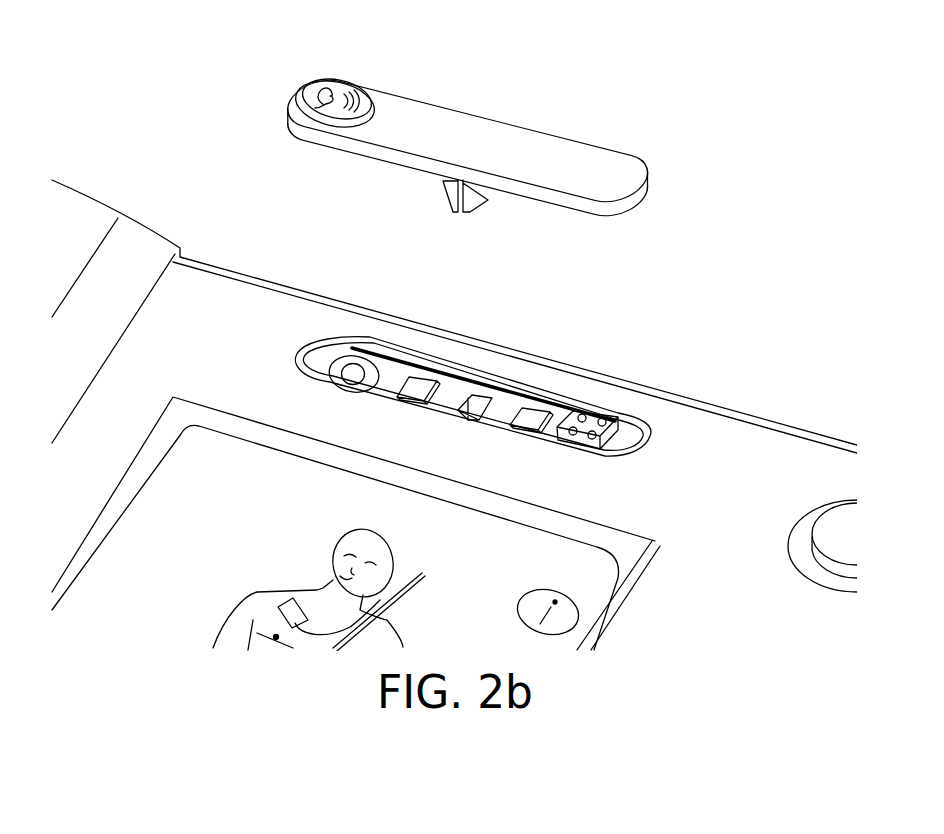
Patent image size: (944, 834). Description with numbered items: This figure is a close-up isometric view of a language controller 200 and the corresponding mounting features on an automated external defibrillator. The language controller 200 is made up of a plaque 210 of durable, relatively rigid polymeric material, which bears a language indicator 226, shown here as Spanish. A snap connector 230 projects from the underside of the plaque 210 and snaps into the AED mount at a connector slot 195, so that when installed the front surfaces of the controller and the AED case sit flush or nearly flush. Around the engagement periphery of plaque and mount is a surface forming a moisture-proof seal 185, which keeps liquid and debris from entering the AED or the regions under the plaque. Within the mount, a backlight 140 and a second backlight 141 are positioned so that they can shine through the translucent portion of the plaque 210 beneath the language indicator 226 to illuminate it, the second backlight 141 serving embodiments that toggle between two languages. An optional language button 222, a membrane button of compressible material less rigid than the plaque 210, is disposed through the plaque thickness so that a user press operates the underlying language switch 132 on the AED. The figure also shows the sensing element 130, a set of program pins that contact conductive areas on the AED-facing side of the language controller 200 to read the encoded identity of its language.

The language controller 200 is at (617, 157).
The plaque 210 is at (538, 137).
The language button 222 is at (322, 92).
The language indicator 226 is at (458, 128).
The snap connector 230 is at (447, 186).
The moisture-proof seal 185 is at (647, 427).
The language switch 132 is at (354, 366).
The backlight 140 is at (411, 380).
The connector slot 195 is at (472, 395).
The second backlight 141 is at (532, 408).
The sensing element 130 is at (592, 420).